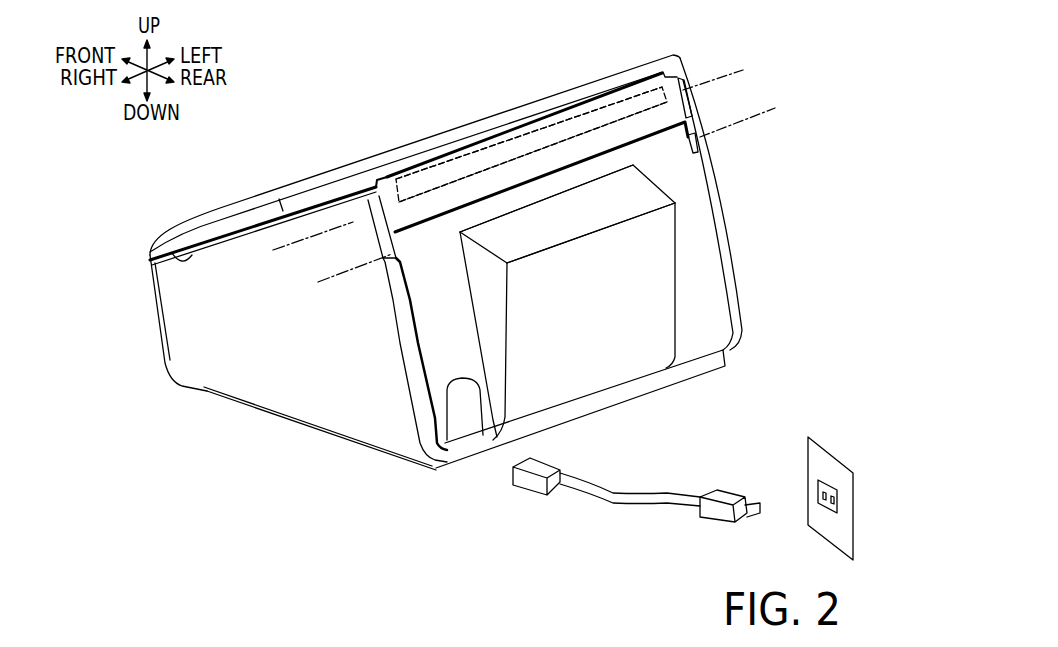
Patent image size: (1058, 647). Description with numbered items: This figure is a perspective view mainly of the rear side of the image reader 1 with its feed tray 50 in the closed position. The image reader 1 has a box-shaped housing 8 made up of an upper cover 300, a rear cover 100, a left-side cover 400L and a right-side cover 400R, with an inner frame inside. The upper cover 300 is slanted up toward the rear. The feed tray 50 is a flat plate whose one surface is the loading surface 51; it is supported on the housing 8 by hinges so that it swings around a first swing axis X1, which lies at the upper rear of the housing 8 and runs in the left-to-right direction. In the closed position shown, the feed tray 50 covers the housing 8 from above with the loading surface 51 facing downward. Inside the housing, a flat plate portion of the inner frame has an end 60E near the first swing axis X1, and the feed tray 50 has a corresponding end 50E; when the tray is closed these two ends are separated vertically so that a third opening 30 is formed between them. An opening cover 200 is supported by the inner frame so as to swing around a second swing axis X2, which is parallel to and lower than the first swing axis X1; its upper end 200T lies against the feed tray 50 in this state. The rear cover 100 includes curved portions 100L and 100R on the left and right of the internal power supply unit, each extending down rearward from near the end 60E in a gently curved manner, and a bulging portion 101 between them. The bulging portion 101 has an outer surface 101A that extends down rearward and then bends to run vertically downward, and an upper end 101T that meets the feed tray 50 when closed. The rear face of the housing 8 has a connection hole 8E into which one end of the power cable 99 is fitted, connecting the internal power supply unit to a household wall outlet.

The image reader 1 is at (330, 85).
The opening cover 200 is at (677, 110).
The upper end of the opening cover 200T is at (410, 160).
The feed tray 50 is at (222, 204).
The end of the feed tray 50E is at (584, 115).
The loading surface 51 is at (183, 259).
The third opening 30 is at (527, 143).
The end of the flat plate portion 60E is at (490, 170).
The upper cover 300 is at (219, 238).
The rear cover 100 is at (697, 231).
The curved portion 100L is at (707, 272).
The curved portion 100R is at (450, 340).
The bulging portion 101 is at (600, 316).
The outer surface of the bulging portion 101A is at (607, 282).
The upper end of the bulging portion 101T is at (494, 187).
The left-side cover 400L is at (722, 172).
The right-side cover 400R is at (289, 346).
The housing 8 is at (746, 337).
The connection hole 8E is at (466, 427).
The power cable 99 is at (591, 506).
The first swing axis X1 is at (725, 72).
The second swing axis X2 is at (751, 115).